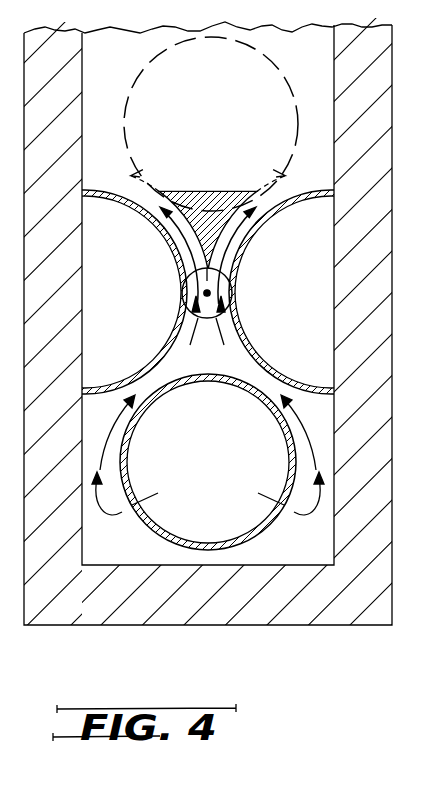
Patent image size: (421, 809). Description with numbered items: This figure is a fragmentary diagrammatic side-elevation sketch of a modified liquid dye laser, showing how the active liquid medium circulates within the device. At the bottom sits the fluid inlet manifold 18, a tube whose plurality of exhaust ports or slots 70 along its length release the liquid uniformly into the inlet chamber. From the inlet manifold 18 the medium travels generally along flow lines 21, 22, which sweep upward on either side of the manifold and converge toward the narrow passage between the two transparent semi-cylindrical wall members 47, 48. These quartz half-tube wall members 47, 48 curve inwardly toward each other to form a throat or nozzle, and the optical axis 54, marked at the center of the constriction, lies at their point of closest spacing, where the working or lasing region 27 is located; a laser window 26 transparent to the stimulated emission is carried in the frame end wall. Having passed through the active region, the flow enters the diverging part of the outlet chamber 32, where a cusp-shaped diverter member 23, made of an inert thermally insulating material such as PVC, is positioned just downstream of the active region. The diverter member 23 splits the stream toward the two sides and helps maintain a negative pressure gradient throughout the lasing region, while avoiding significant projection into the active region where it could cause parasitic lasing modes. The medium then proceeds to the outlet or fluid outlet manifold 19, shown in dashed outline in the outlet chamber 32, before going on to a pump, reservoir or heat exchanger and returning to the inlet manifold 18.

The outlet chamber 32 is at (121, 75).
The fluid outlet manifold 19 is at (295, 102).
The transparent semi-cylindrical wall member 47 is at (98, 181).
The transparent semi-cylindrical wall member 48 is at (318, 182).
The diverter member 23 is at (190, 255).
The optical axis 54 is at (213, 292).
The laser window 26 is at (200, 330).
The working or lasing region 27 is at (222, 330).
The fluid inlet manifold 18 is at (203, 373).
The flow line 21 is at (100, 437).
The flow line 22 is at (316, 445).
The exhaust ports or slots 70 is at (143, 503).